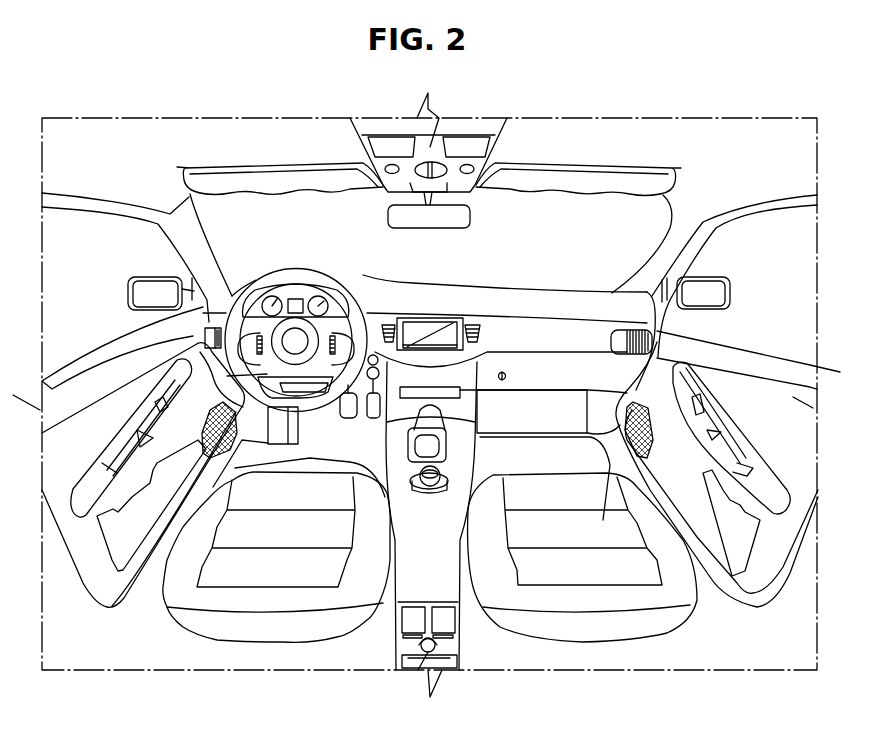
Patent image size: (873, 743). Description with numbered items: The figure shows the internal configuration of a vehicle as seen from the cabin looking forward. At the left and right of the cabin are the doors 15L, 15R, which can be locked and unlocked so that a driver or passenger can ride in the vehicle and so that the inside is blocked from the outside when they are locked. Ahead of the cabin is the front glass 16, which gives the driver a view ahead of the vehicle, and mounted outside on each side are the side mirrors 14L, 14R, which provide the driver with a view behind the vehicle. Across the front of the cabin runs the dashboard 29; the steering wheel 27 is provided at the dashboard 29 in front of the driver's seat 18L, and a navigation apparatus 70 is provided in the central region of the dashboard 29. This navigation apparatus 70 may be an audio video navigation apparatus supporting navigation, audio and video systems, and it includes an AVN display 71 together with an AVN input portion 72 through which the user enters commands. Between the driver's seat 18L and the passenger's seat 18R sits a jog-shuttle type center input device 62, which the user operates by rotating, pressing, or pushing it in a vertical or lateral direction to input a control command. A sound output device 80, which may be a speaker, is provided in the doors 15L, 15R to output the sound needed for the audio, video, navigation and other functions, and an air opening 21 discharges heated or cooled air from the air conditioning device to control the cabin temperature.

The side mirror 14L is at (148, 285).
The side mirror 14R is at (712, 287).
The door 15L is at (68, 438).
The door 15R is at (790, 438).
The front glass 16 is at (538, 204).
The driver's seat 18L is at (253, 627).
The passenger's seat 18R is at (587, 627).
The air opening 21 is at (200, 333).
The steering wheel 27 is at (258, 287).
The dashboard 29 is at (574, 298).
The center input device 62 is at (446, 470).
The navigation apparatus 70 is at (459, 285).
The AVN display 71 is at (440, 318).
The AVN input portion 72 is at (463, 315).
The sound output device 80 is at (203, 433).